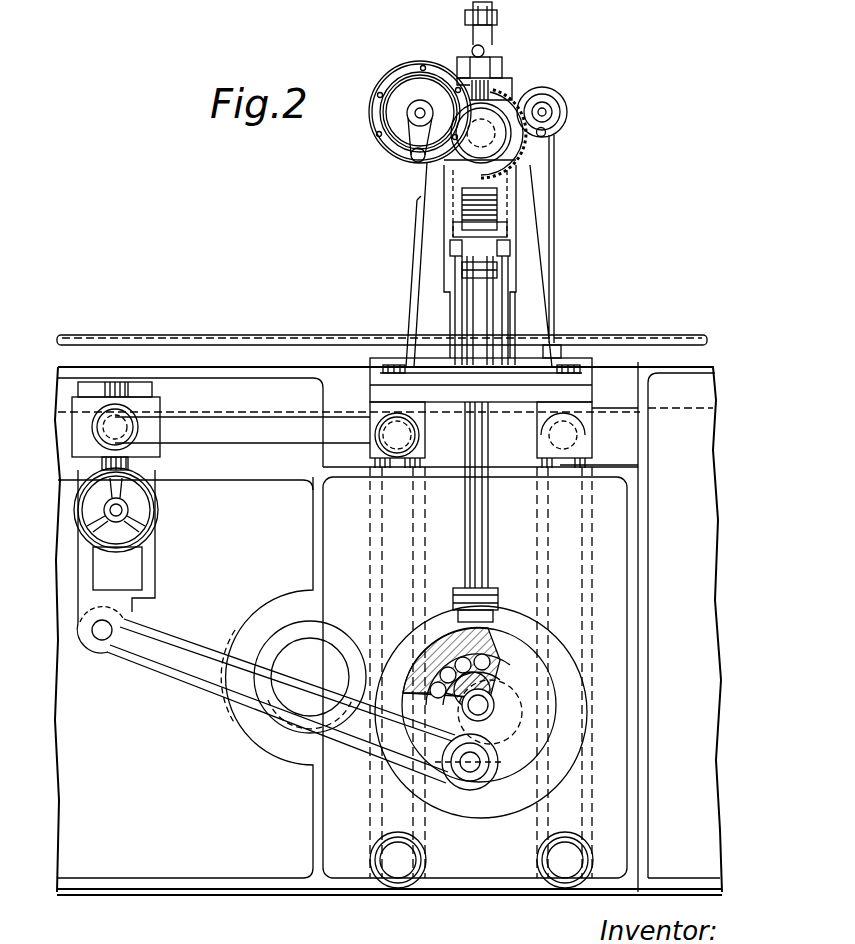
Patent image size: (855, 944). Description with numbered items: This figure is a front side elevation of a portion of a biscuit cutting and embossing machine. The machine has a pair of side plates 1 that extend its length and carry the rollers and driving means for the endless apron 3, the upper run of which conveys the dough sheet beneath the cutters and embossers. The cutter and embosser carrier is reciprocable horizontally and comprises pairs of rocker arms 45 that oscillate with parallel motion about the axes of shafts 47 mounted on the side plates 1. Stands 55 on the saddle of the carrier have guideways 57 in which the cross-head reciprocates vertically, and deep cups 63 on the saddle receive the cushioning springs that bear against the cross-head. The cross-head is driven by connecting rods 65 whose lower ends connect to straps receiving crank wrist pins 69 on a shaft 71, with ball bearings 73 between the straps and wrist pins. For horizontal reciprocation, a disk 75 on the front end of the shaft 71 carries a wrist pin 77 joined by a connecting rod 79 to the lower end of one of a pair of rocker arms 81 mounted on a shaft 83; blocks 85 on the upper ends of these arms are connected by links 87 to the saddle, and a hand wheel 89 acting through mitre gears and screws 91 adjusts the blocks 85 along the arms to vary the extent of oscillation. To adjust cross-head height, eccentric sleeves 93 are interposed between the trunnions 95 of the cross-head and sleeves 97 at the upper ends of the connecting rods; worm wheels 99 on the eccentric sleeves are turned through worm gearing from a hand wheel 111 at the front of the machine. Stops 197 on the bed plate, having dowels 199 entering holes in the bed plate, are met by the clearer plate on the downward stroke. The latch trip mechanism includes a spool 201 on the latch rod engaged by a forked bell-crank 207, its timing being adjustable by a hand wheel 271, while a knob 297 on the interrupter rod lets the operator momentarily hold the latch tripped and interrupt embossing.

The side plates 1 is at (718, 628).
The endless apron 3 is at (272, 338).
The rocker arms 45 is at (370, 525).
The shafts 47 is at (565, 862).
The stands 55 is at (422, 228).
The guideways 57 is at (450, 210).
The cups 63 is at (515, 305).
The connecting rods 65 is at (488, 514).
The crank wrist pins 69 is at (485, 686).
The shaft 71 is at (497, 713).
The ball bearings 73 is at (490, 632).
The disk 75 is at (495, 782).
The wrist pin 77 is at (470, 770).
The connecting rod 79 is at (198, 678).
The rocker arms 81 is at (145, 576).
The shaft 83 is at (139, 510).
The blocks 85 is at (152, 400).
The links 87 is at (240, 420).
The hand wheel 89 is at (152, 520).
The screws 91 is at (128, 463).
The eccentric sleeves 93 is at (490, 150).
The trunnions 95 is at (546, 132).
The sleeves 97 is at (518, 178).
The worm wheels 99 is at (510, 96).
The hand wheel 111 is at (372, 120).
The stops 197 is at (556, 330).
The dowels 199 is at (562, 345).
The spool 201 is at (463, 58).
The bell-crank 207 is at (495, 28).
The hand wheel 271 is at (567, 110).
The knob 297 is at (485, 50).